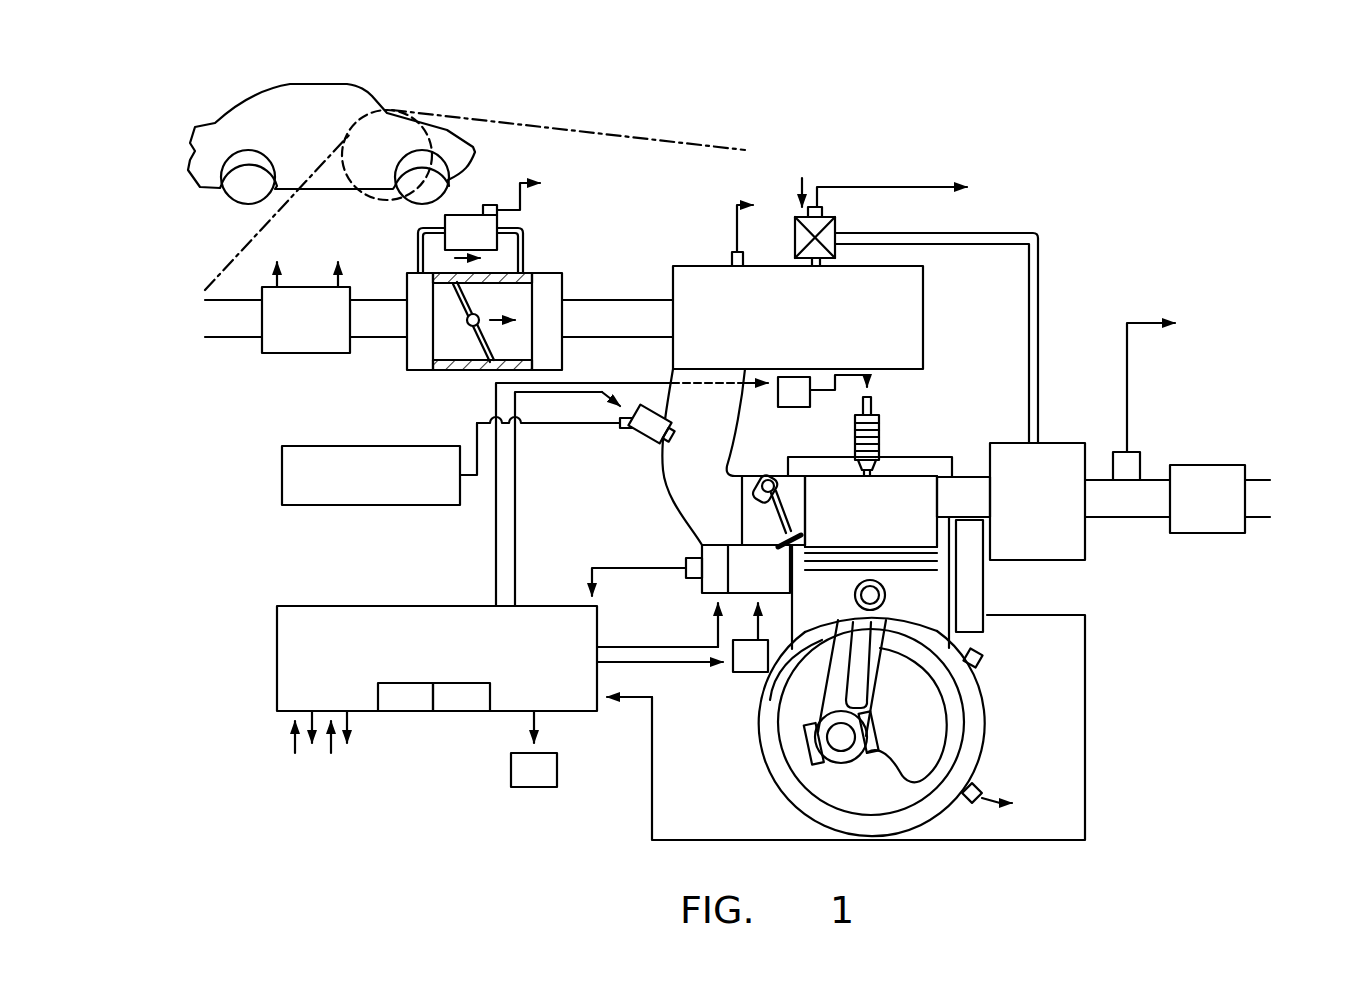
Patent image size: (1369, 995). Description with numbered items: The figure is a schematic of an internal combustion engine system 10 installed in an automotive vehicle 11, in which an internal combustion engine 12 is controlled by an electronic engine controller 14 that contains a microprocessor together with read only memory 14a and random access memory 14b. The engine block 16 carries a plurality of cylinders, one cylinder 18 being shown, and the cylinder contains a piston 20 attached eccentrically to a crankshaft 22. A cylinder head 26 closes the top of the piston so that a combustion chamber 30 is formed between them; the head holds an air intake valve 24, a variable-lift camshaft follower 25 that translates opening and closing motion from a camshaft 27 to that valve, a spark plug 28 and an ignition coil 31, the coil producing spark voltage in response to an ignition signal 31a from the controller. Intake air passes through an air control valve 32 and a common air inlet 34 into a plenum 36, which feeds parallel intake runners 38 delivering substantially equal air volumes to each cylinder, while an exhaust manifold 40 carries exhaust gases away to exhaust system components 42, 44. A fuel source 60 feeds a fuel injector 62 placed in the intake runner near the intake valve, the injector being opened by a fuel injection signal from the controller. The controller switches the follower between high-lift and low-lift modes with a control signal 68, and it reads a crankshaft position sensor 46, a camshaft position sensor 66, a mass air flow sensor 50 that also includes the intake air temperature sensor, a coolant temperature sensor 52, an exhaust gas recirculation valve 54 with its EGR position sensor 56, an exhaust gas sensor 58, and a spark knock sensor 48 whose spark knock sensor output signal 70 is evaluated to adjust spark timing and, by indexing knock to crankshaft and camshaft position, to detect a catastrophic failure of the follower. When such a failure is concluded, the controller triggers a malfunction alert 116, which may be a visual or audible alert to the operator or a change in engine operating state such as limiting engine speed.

The internal combustion engine system 10 is at (1180, 124).
The automotive vehicle 11 is at (310, 139).
The internal combustion engine 12 is at (1104, 602).
The electronic engine controller 14 is at (437, 639).
The read only memory (ROM) 14a is at (405, 697).
The random access memory (RAM) 14b is at (461, 697).
The engine block 16 is at (986, 706).
The cylinder 18 is at (822, 676).
The piston 20 is at (835, 620).
The crankshaft 22 is at (928, 738).
The air intake valve 24 is at (791, 530).
The variable-lift camshaft follower 25 is at (764, 667).
The cylinder head 26 is at (950, 468).
The camshaft 27 is at (765, 479).
The spark plug 28 is at (878, 437).
The combustion chamber 30 is at (826, 495).
The ignition coil 31 is at (807, 402).
The ignition signal 31a is at (495, 396).
The air control valve 32 is at (562, 273).
The common air inlet 34 is at (615, 300).
The plenum 36 is at (710, 266).
The intake runner 38 is at (672, 468).
The exhaust manifold 40 is at (1087, 540).
The exhaust system component 42 is at (1180, 465).
The exhaust system component 44 is at (1258, 480).
The crankshaft position sensor 46 is at (980, 787).
The spark knock sensor 48 is at (985, 578).
The mass air flow sensor 50 is at (305, 353).
The coolant temperature sensor 52 is at (981, 653).
The exhaust gas recirculation (EGR) valve 54 is at (795, 238).
The EGR position sensor 56 is at (825, 213).
The exhaust gas sensor 58 is at (1113, 465).
The fuel source 60 is at (385, 493).
The fuel injector 62 is at (640, 438).
The camshaft position sensor 66 is at (698, 555).
The control signal 68 is at (665, 663).
The spark knock sensor output signal 70 is at (652, 812).
The malfunction alert 116 is at (554, 782).